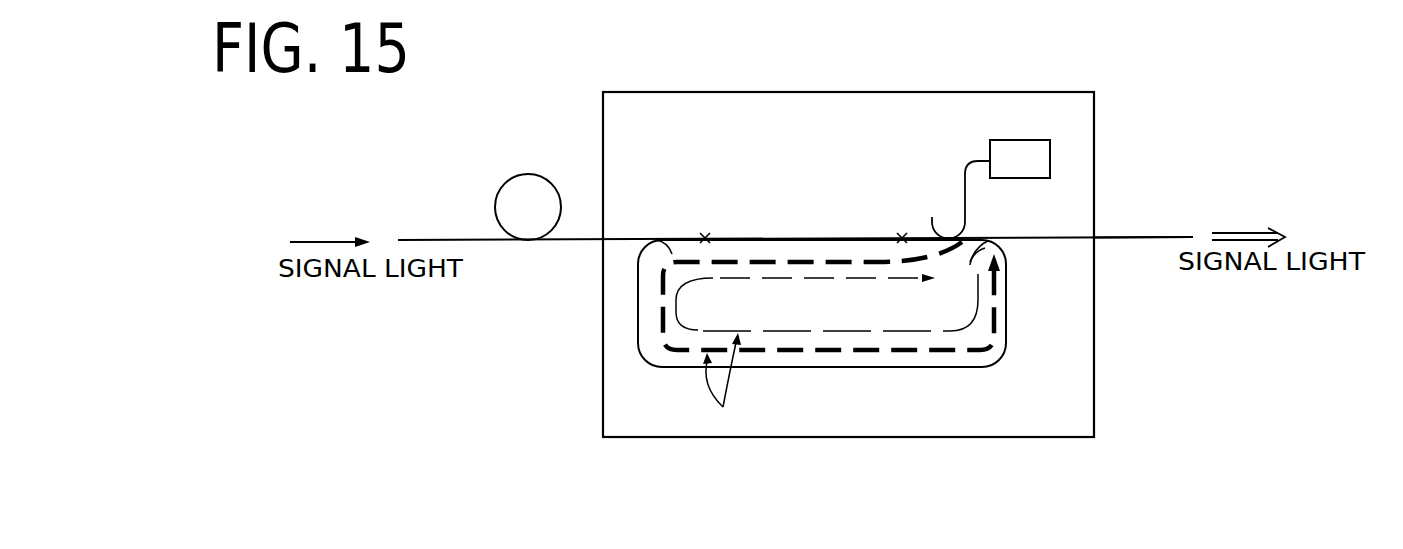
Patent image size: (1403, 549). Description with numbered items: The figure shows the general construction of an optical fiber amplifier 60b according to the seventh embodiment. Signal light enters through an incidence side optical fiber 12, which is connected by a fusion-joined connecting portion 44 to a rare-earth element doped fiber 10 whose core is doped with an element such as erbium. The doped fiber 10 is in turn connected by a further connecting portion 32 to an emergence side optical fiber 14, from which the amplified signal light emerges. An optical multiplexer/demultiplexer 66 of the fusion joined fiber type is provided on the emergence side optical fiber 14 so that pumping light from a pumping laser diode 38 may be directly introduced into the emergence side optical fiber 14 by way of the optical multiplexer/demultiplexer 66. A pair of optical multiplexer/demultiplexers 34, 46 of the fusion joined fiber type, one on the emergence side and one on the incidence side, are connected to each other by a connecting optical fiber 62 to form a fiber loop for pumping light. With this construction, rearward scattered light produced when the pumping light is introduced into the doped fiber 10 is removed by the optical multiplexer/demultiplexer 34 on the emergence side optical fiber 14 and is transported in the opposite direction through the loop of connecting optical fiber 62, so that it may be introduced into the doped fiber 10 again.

The rare-earth element doped fiber 10 is at (781, 238).
The incidence side optical fiber 12 is at (527, 174).
The emergence side optical fiber 14 is at (1152, 236).
The connecting portion 32 is at (902, 235).
The optical multiplexer/demultiplexer 34 is at (985, 237).
The pumping laser diode 38 is at (1043, 158).
The connecting portion 44 is at (705, 235).
The optical multiplexer/demultiplexer 46 is at (652, 238).
The optical fiber amplifier 60b is at (888, 86).
The connecting optical fiber 62 is at (960, 366).
The optical multiplexer/demultiplexer 66 is at (949, 235).